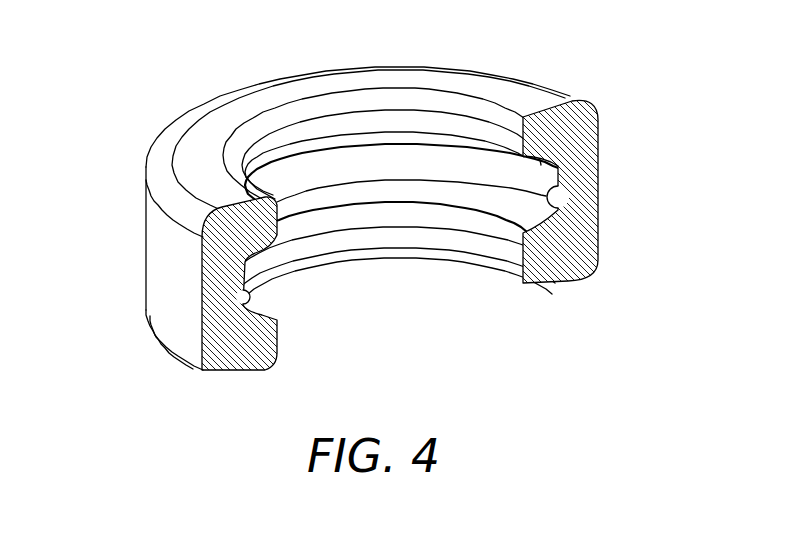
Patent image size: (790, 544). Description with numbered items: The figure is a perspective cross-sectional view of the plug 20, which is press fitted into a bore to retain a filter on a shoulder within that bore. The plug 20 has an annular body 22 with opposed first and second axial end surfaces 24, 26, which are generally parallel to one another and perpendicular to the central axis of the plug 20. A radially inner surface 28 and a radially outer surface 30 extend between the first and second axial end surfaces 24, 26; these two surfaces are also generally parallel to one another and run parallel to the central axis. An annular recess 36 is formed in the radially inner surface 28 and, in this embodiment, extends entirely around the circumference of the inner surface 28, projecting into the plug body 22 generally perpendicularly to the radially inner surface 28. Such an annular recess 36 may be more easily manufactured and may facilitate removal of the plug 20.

The plug 20 is at (137, 362).
The annular body 22 is at (252, 355).
The first axial end surface 24 is at (427, 72).
The second axial end surface 26 is at (558, 284).
The radially inner surface 28 is at (280, 336).
The radially outer surface 30 is at (600, 164).
The annular recess 36 is at (560, 210).